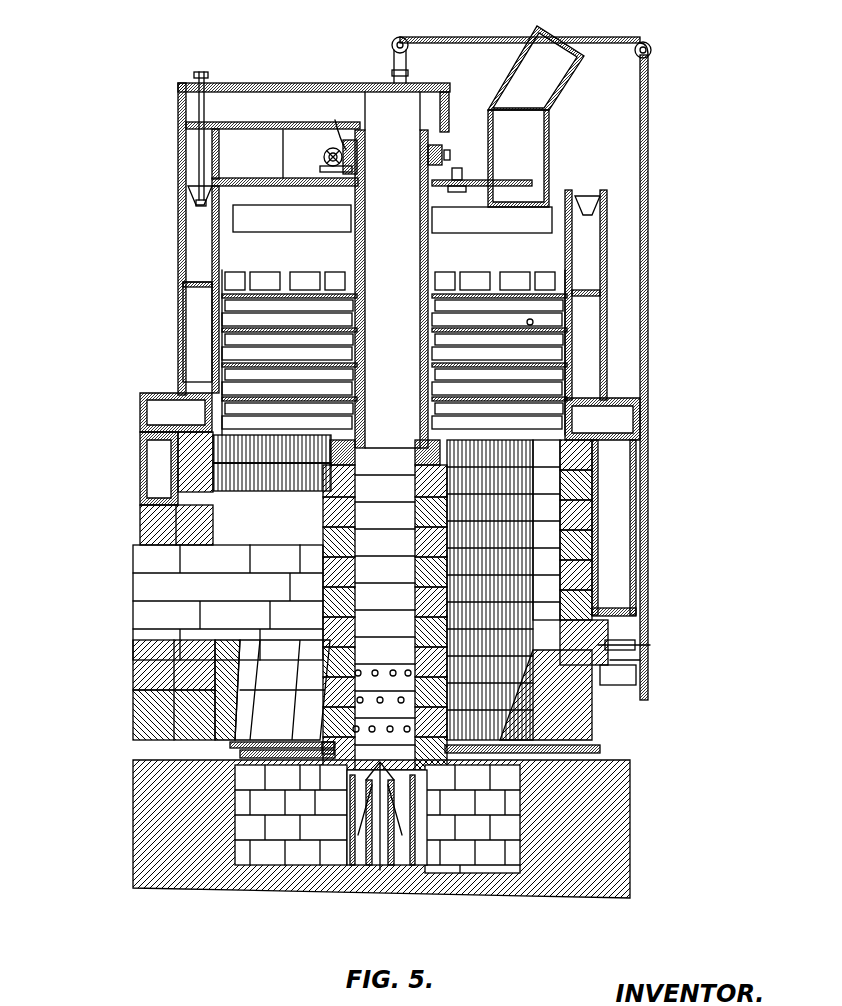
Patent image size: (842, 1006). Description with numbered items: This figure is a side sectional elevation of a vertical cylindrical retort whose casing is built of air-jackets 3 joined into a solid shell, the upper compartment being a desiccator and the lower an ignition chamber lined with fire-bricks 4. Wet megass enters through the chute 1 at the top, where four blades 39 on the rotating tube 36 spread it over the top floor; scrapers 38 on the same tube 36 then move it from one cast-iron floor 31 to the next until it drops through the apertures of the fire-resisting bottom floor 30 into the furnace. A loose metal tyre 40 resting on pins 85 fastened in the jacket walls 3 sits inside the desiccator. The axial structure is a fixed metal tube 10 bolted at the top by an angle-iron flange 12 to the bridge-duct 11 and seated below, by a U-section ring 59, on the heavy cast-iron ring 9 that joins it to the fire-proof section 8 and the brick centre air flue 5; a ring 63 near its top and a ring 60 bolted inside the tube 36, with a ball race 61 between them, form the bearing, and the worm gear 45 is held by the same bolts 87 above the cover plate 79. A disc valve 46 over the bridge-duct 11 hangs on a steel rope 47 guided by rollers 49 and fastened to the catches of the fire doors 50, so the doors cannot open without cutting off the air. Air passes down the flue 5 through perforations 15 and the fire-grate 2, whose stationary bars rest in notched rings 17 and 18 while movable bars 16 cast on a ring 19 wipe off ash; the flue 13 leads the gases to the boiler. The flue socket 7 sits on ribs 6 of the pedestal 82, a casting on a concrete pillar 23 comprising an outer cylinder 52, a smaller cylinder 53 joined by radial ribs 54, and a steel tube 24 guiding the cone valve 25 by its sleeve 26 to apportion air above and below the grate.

The chute 1 is at (510, 98).
The fire-grate 2 is at (500, 775).
The air-jackets 3 is at (190, 320).
The fire-bricks 4 is at (165, 522).
The centre air flue 5 is at (420, 622).
The pedestal 6 is at (340, 800).
The socket 7 is at (330, 772).
The fire proof section 8 is at (340, 486).
The cast-iron ring 9 is at (415, 458).
The metal tube 10 is at (428, 360).
The bridge-duct 11 is at (268, 83).
The angle-iron flange 12 is at (418, 138).
The flue 13 is at (212, 590).
The perforations 15 is at (393, 670).
The movable bars 16 is at (235, 750).
The centre ring 17 is at (230, 775).
The outer ring 18 is at (330, 768).
The ring 19 is at (312, 750).
The concrete pillar 23 is at (528, 878).
The wrought steel tube 24 is at (385, 870).
The valve 25 is at (392, 780).
The sleeve 26 is at (520, 795).
The bottom floor 30 is at (215, 430).
The floors 31 is at (260, 330).
The rotating tube 36 is at (430, 276).
The scrapers 38 is at (485, 315).
The blades 39 is at (255, 222).
The metal tyre 40 is at (220, 270).
The worm gear 45 is at (442, 157).
The valve 46 is at (380, 82).
The steel rope 47 is at (640, 140).
The rollers 49 is at (632, 60).
The fire doors 50 is at (612, 690).
The cylinder 52 is at (402, 830).
The cylinder 53 is at (412, 822).
The radial ribs 54 is at (380, 825).
The metal ring 59 is at (428, 412).
The ring 60 is at (352, 153).
The ball race 61 is at (360, 166).
The metal ring 63 is at (420, 196).
The cover plate 79 is at (283, 180).
The pedestal 82 is at (335, 840).
The pins 85 is at (195, 330).
The bolts 87 is at (503, 147).